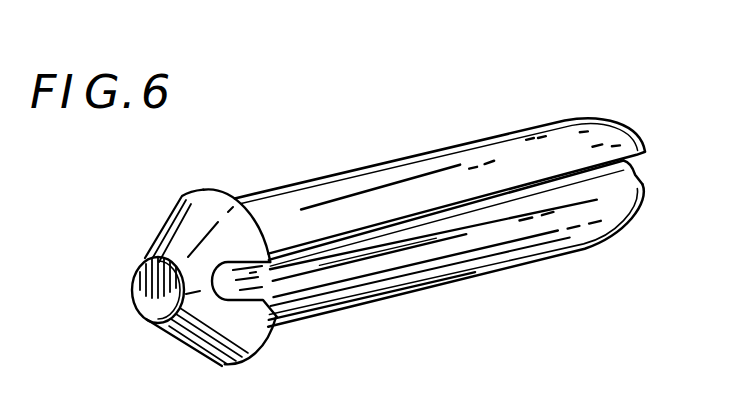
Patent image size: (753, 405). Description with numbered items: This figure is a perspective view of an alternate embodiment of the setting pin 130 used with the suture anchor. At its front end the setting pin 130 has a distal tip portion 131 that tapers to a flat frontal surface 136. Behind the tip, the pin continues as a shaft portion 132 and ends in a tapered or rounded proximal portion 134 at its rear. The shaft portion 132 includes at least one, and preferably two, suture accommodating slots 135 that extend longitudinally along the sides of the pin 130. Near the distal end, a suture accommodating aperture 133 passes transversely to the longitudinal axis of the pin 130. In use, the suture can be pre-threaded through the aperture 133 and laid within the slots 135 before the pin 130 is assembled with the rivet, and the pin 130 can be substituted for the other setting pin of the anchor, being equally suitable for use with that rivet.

The setting pin 130 is at (484, 227).
The distal tip portion 131 is at (180, 222).
The shaft portion 132 is at (506, 267).
The suture accommodating aperture 133 is at (268, 303).
The tapered or rounded proximal portion 134 is at (634, 131).
The suture accommodating slots 135 is at (650, 171).
The flat frontal surface 136 is at (143, 300).